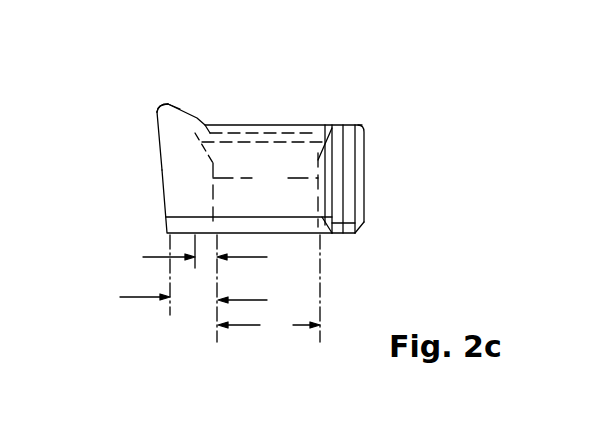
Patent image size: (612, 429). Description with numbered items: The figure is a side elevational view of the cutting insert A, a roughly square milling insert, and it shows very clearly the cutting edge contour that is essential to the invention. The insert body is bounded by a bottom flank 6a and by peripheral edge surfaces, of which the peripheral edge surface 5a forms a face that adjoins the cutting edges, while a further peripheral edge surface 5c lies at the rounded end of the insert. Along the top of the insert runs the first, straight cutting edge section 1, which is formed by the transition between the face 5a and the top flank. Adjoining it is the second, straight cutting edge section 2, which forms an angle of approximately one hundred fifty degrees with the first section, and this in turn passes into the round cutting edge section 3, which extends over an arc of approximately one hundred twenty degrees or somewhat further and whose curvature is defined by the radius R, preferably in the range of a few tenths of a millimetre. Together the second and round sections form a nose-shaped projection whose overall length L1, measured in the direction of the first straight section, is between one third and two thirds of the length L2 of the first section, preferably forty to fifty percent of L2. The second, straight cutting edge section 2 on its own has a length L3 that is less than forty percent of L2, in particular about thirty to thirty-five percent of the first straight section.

The radius of curvature R is at (157, 108).
The round cutting edge section 3 is at (163, 107).
The second straight cutting edge section 2 is at (193, 117).
The first straight cutting edge section 1 is at (282, 125).
The cutting insert A is at (346, 107).
The peripheral edge surface 5c is at (158, 143).
The peripheral edge surface 5a is at (173, 192).
The bottom flank 6a is at (335, 235).
The length of the nose-shaped cutting edge projection L1 is at (192, 298).
The length of the first straight cutting edge section L2 is at (268, 288).
The length of the second straight cutting edge section L3 is at (210, 256).